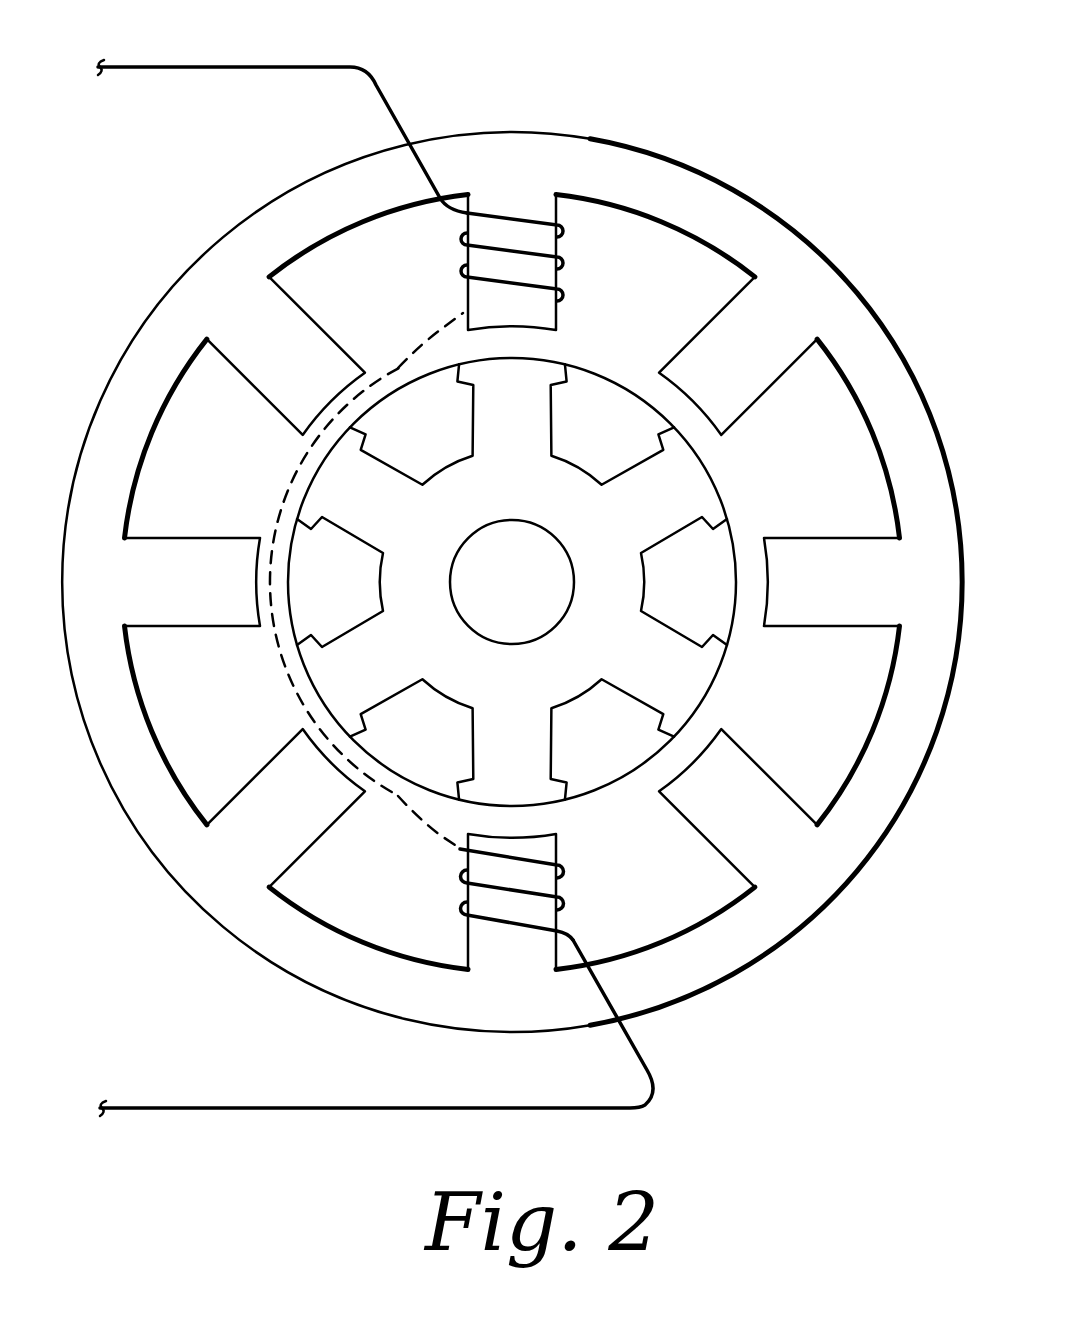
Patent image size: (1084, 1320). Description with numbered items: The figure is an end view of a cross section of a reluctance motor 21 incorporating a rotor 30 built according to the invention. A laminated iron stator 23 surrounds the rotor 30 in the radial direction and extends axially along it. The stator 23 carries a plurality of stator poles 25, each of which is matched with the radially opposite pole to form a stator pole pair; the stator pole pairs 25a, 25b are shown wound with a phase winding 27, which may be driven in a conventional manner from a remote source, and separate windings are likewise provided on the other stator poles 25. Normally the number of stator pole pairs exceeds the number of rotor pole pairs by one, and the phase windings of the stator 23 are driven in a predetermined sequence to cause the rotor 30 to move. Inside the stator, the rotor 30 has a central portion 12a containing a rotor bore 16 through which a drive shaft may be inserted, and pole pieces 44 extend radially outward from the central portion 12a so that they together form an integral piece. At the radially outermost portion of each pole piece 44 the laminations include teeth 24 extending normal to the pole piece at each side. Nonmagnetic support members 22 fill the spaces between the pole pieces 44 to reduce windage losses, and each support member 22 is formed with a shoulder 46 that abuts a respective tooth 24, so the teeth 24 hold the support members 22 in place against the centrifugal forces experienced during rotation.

The reluctance motor 21 is at (800, 80).
The nonmagnetic support member 22 is at (629, 423).
The laminated iron stator 23 is at (858, 312).
The tooth 24 is at (557, 364).
The stator pole 25 is at (294, 363).
The stator pole pair 25a is at (566, 232).
The stator pole pair 25b is at (421, 626).
The phase winding 27 is at (235, 67).
The rotor 30 is at (553, 805).
The pole piece 44 is at (520, 353).
The shoulder 46 is at (553, 393).
The central portion 12a is at (462, 495).
The rotor bore 16 is at (533, 575).